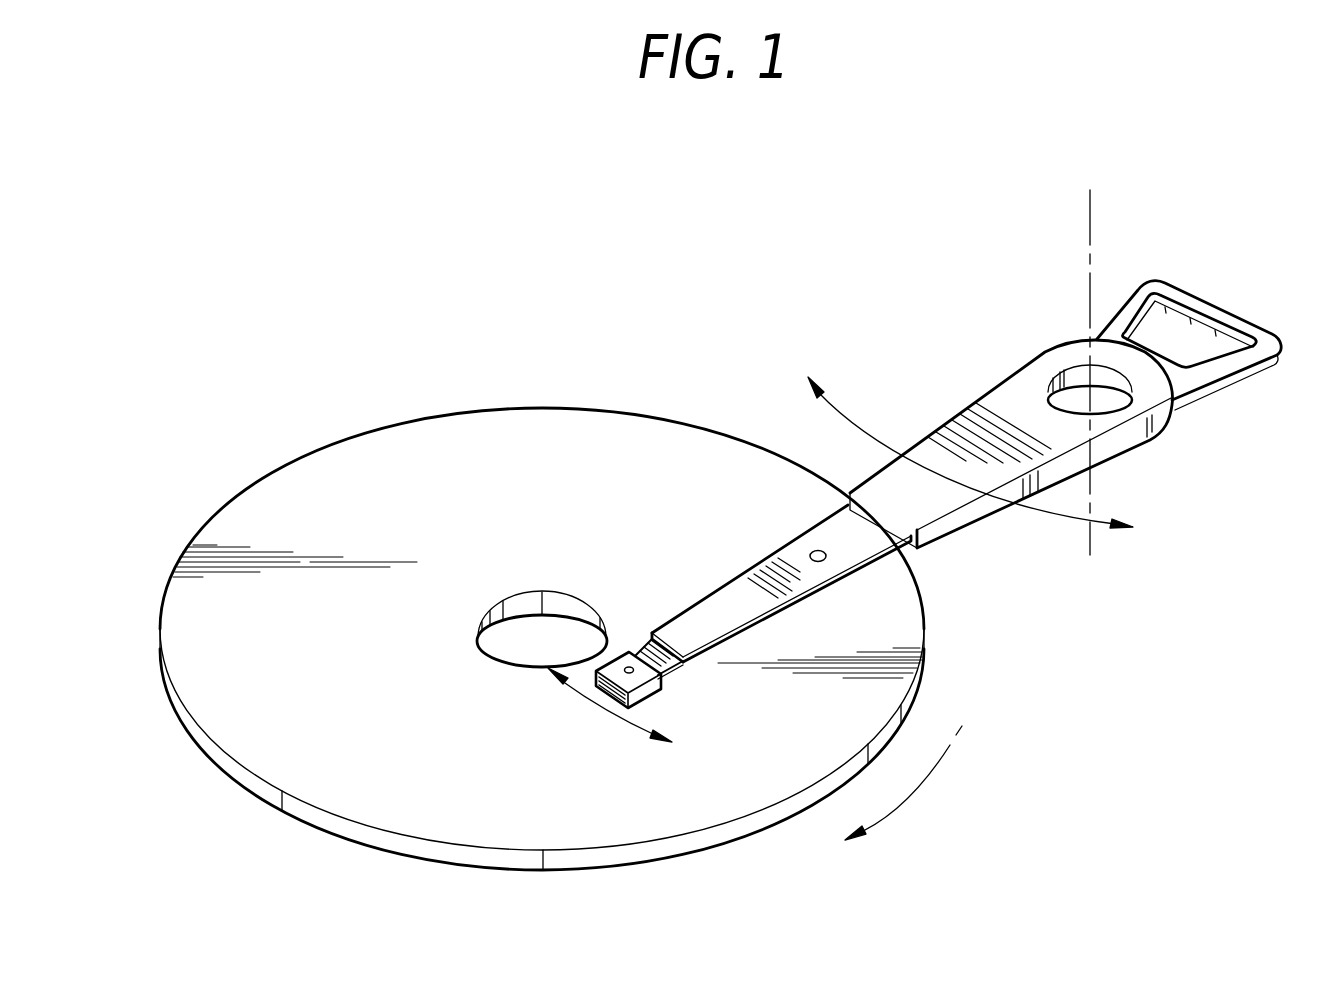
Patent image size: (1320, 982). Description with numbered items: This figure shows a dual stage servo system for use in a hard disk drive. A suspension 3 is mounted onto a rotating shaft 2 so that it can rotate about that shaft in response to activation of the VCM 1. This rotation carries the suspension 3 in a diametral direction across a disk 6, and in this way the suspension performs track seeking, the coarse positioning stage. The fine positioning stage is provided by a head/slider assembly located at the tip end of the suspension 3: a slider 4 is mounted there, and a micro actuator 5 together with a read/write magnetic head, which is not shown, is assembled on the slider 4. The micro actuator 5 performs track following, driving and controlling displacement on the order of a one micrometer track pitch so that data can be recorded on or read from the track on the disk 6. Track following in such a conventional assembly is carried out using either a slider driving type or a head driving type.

The VCM 1 is at (1215, 300).
The rotating shaft 2 is at (1090, 232).
The suspension 3 is at (780, 555).
The slider 4 is at (635, 704).
The micro actuator 5 is at (603, 692).
The disk 6 is at (397, 427).